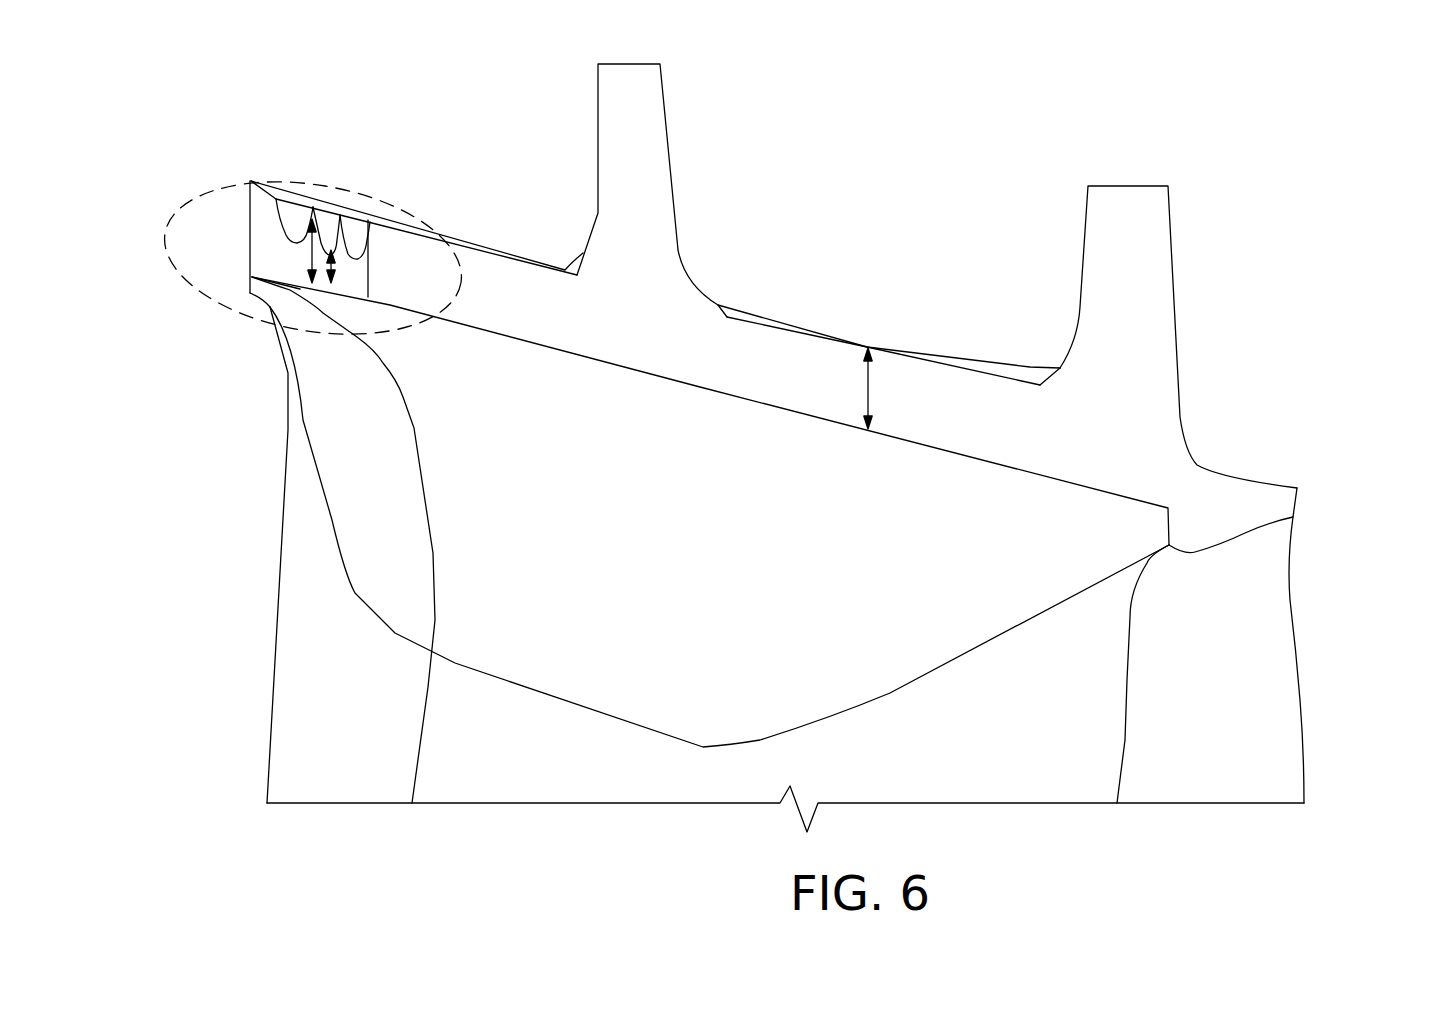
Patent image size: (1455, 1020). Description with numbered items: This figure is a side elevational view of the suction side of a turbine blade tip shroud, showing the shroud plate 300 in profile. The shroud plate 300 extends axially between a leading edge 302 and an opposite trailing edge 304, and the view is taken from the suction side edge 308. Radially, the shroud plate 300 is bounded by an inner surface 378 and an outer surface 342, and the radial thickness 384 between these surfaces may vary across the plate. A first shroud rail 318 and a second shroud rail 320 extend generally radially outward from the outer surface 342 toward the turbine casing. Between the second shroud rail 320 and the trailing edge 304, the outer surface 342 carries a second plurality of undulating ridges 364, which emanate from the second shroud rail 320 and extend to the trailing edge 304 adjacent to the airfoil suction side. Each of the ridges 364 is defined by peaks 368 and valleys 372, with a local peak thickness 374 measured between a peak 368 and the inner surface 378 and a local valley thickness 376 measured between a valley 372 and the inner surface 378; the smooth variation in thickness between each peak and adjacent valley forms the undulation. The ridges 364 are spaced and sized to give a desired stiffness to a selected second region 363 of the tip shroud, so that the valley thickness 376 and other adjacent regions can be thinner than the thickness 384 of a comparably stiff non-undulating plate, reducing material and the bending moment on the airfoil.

The shroud plate 300 is at (975, 330).
The leading edge 302 is at (1325, 493).
The trailing edge 304 is at (248, 245).
The suction side edge 308 is at (1002, 408).
The first shroud rail 318 is at (1128, 150).
The second shroud rail 320 is at (654, 52).
The outer surface 342 is at (952, 357).
The second region 363 is at (247, 297).
The second plurality of undulating ridges 364 is at (359, 207).
The peaks 368 is at (338, 200).
The valleys 372 is at (278, 245).
The local peak thickness 374 is at (312, 250).
The local valley thickness 376 is at (337, 253).
The inner surface 378 is at (900, 438).
The radial thickness 384 is at (865, 390).